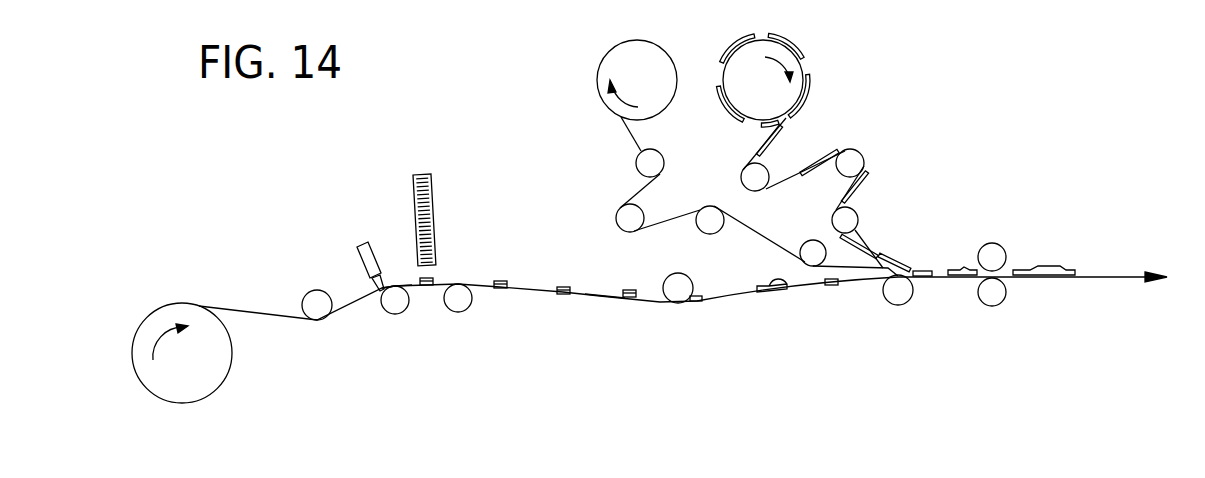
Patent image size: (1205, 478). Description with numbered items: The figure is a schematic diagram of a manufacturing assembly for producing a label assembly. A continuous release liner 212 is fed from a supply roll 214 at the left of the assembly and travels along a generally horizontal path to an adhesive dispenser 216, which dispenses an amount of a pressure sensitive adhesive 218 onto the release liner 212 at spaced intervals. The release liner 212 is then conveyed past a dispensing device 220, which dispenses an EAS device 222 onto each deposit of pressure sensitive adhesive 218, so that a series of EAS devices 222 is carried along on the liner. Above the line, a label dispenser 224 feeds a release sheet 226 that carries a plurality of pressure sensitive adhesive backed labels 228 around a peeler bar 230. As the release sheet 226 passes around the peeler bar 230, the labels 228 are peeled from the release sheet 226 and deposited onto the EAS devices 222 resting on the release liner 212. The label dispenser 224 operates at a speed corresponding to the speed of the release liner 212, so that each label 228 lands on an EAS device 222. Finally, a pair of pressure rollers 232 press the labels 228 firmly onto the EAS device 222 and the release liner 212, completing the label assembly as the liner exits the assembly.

The release liner 212 is at (200, 303).
The supply roll 214 is at (225, 359).
The adhesive dispenser 216 is at (360, 250).
The pressure sensitive adhesive 218 is at (412, 280).
The dispensing device 220 is at (434, 170).
The EAS device 222 is at (560, 287).
The label dispenser 224 is at (846, 78).
The release sheet 226 is at (765, 237).
The pressure sensitive adhesive backed labels 228 is at (841, 136).
The peeler bar 230 is at (830, 233).
The pressure rollers 232 is at (998, 248).